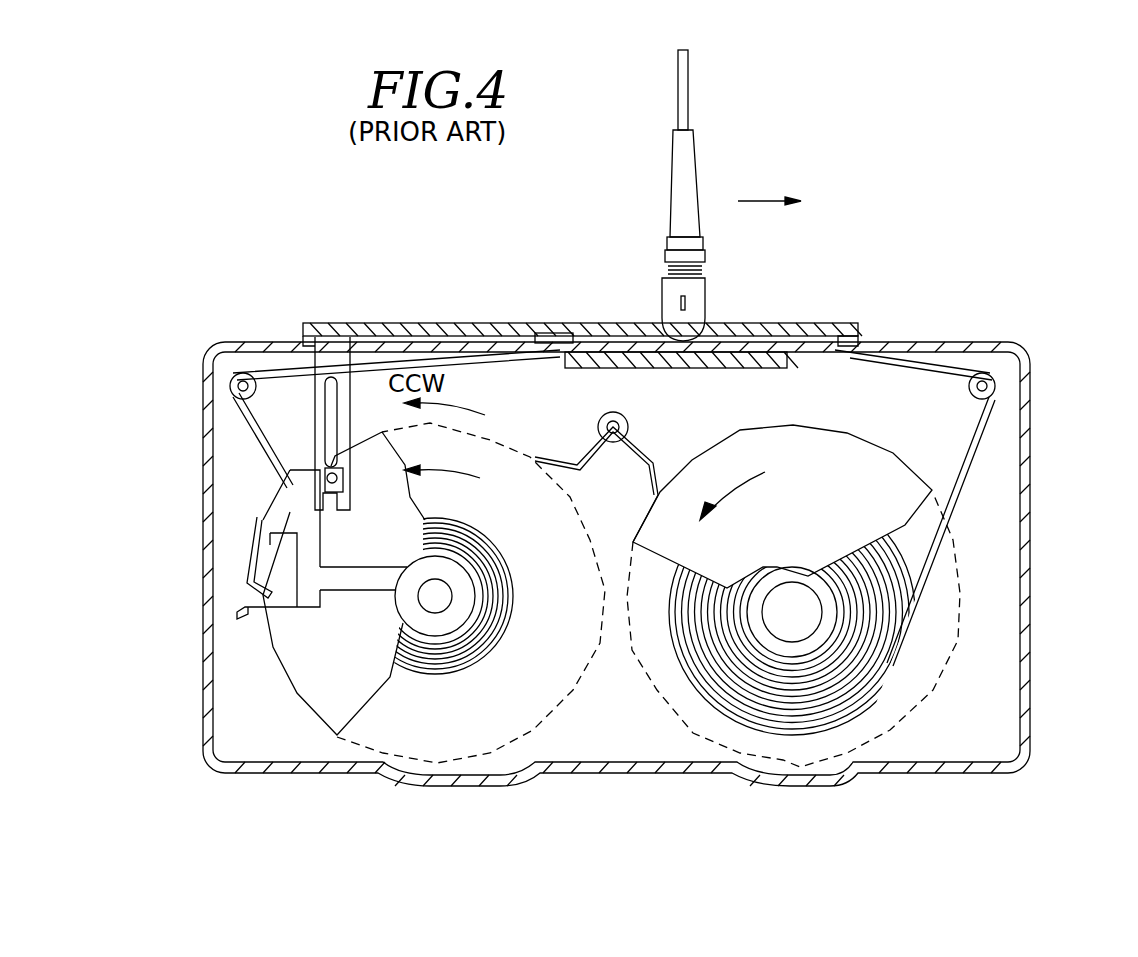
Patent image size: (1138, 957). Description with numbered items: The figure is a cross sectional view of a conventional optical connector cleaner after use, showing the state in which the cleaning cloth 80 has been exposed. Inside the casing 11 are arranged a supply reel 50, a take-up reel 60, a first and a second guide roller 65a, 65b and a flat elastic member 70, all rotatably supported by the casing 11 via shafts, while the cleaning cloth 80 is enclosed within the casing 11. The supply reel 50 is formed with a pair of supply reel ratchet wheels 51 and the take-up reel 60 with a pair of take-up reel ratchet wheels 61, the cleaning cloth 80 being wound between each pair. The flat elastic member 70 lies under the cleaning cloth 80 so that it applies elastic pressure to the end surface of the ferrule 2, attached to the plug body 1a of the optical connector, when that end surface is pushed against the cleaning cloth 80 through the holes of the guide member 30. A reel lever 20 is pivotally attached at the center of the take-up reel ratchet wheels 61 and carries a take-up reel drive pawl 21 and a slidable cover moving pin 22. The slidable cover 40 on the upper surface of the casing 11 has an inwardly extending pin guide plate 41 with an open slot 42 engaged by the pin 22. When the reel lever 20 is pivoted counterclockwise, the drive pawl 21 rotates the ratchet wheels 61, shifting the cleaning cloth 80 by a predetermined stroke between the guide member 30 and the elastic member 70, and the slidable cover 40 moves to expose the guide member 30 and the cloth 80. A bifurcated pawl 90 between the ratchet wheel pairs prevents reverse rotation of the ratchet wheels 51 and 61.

The plug body 1a is at (690, 290).
The ferrule 2 is at (670, 340).
The casing 11 is at (958, 768).
The reel lever 20 is at (233, 615).
The take-up reel drive pawl 21 is at (253, 558).
The slidable cover moving pin 22 is at (345, 465).
The guide member 30 is at (587, 337).
The slidable cover 40 is at (420, 337).
The pin guide plate 41 is at (327, 337).
The open slot 42 is at (330, 407).
The supply reel 50 is at (945, 627).
The supply reel ratchet wheels 51 is at (857, 480).
The take-up reel 60 is at (412, 728).
The take-up reel ratchet wheels 61 is at (290, 512).
The first guide roller 65a is at (985, 373).
The second guide roller 65b is at (243, 373).
The flat elastic member 70 is at (787, 337).
The cleaning cloth 80 is at (970, 470).
The bifurcated pawl 90 is at (645, 450).